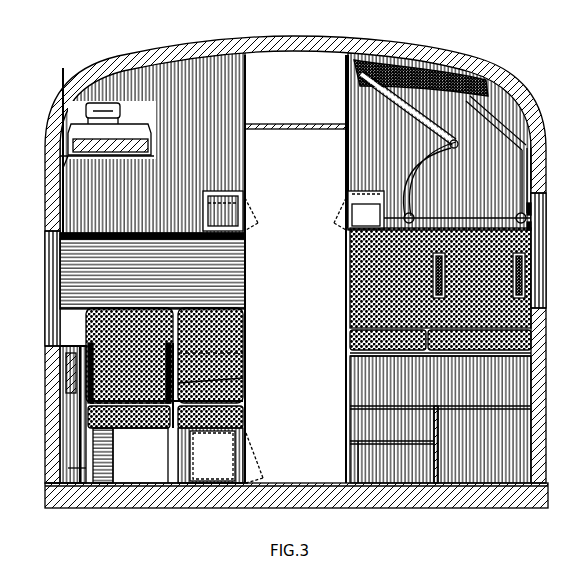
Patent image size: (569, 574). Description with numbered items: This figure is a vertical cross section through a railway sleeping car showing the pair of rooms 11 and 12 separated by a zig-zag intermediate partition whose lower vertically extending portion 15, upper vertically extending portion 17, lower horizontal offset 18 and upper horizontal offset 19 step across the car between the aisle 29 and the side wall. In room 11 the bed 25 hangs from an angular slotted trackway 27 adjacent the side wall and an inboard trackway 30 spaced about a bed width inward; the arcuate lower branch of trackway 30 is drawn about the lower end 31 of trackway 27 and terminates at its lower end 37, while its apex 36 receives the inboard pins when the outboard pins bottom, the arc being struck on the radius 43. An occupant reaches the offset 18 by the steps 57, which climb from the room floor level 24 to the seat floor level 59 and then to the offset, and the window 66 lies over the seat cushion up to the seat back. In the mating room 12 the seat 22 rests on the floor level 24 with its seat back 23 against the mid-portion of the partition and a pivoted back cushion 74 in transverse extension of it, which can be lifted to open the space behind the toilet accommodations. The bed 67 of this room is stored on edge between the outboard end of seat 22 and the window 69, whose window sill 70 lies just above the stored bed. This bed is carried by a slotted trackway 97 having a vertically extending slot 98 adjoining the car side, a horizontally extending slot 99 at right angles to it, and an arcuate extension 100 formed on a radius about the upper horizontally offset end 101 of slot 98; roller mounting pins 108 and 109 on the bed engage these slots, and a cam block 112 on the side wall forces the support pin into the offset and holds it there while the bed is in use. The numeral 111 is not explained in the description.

The room 11 is at (387, 151).
The room 12 is at (108, 150).
The lower vertically extending portion 15 is at (152, 271).
The upper vertically extending portion 17 is at (472, 128).
The lower horizontal offset 18 is at (350, 341).
The upper horizontal offset 19 is at (58, 200).
The seat 22 is at (148, 420).
The seat back 23 is at (240, 290).
The room floor level 24 is at (313, 475).
The bed 25 is at (430, 55).
The angular slotted trackway 27 is at (528, 133).
The aisle 29 is at (329, 256).
The trackway 30 is at (402, 107).
The lower end of trackway 31 is at (525, 200).
The apex of trackway 36 is at (446, 138).
The lower end of arcuate branch 37 is at (370, 200).
The radius of arcuate portion 43 is at (510, 204).
The steps 57 is at (385, 398).
The seat floor level 59 is at (440, 419).
The window 66 is at (535, 250).
The bed 67 is at (60, 462).
The window 69 is at (42, 270).
The window sill 70 is at (58, 340).
The back cushion 74 is at (215, 318).
The trackway 97 is at (30, 420).
The vertically extending slot 98 is at (62, 437).
The horizontally extending slot 99 is at (129, 355).
The arcuate extension 100 is at (215, 375).
The upper horizontally offset end 101 is at (62, 365).
The roller mounting pin 108 is at (75, 360).
The roller mounting pin 109 is at (45, 478).
The back cushion 111 is at (210, 336).
The cam block 112 is at (130, 402).